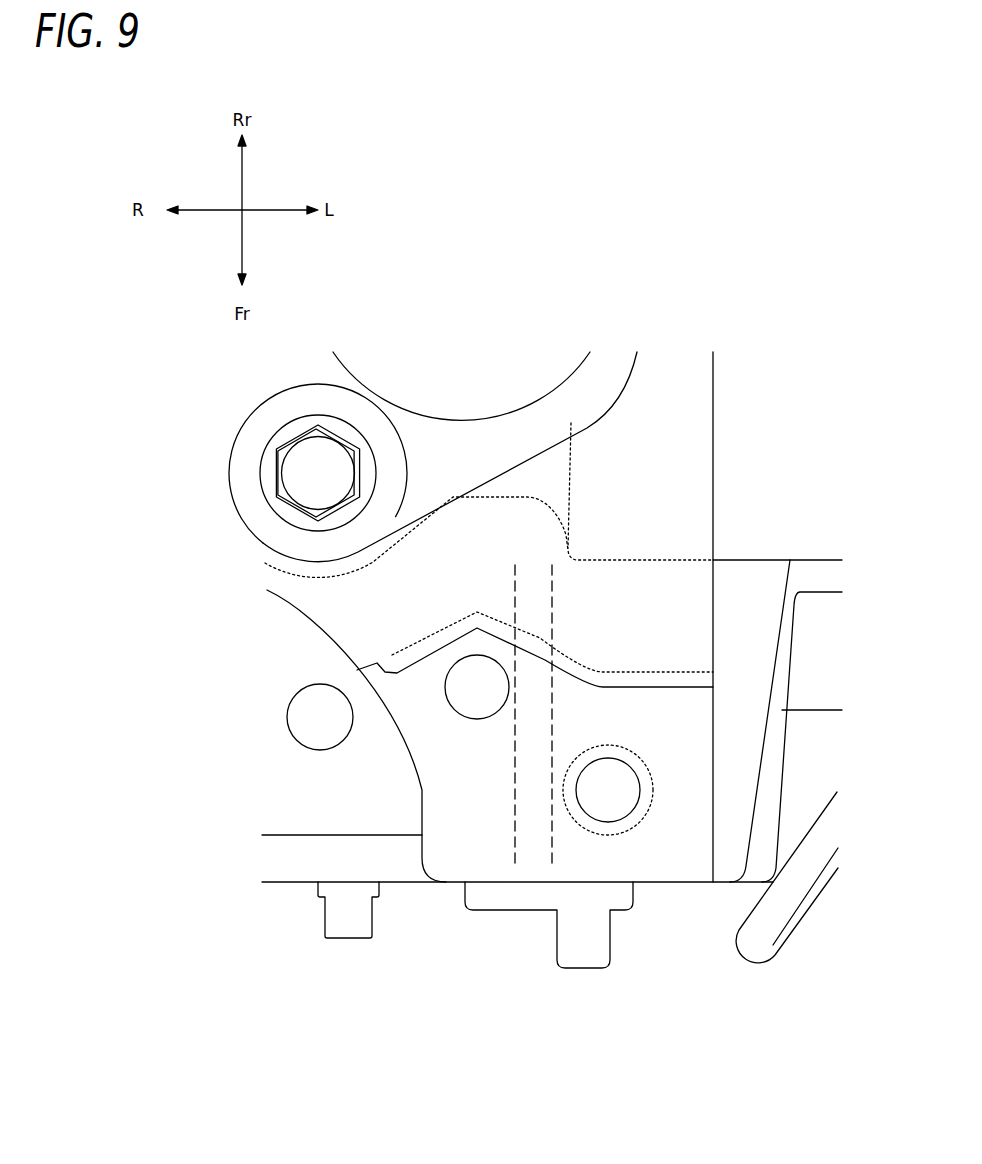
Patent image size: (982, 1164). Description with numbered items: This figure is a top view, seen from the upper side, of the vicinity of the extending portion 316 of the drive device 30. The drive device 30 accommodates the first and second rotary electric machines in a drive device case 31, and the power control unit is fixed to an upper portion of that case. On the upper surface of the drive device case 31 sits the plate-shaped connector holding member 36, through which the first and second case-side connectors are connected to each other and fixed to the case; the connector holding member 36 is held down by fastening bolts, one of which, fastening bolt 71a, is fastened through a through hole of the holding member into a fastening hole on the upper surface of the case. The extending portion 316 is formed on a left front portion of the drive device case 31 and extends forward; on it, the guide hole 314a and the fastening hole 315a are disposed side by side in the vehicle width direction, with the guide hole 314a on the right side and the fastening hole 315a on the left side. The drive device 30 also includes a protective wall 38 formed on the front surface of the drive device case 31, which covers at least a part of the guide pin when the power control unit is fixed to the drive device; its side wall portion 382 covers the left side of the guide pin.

The drive device 30 is at (758, 323).
The drive device case 31 is at (672, 473).
The connector holding member 36 is at (285, 372).
The fastening bolt 71a is at (317, 473).
The guide hole 314a is at (477, 685).
The fastening hole 315a is at (617, 790).
The extending portion 316 is at (447, 813).
The side wall portion 382 is at (528, 810).
The protective wall 38 is at (657, 897).